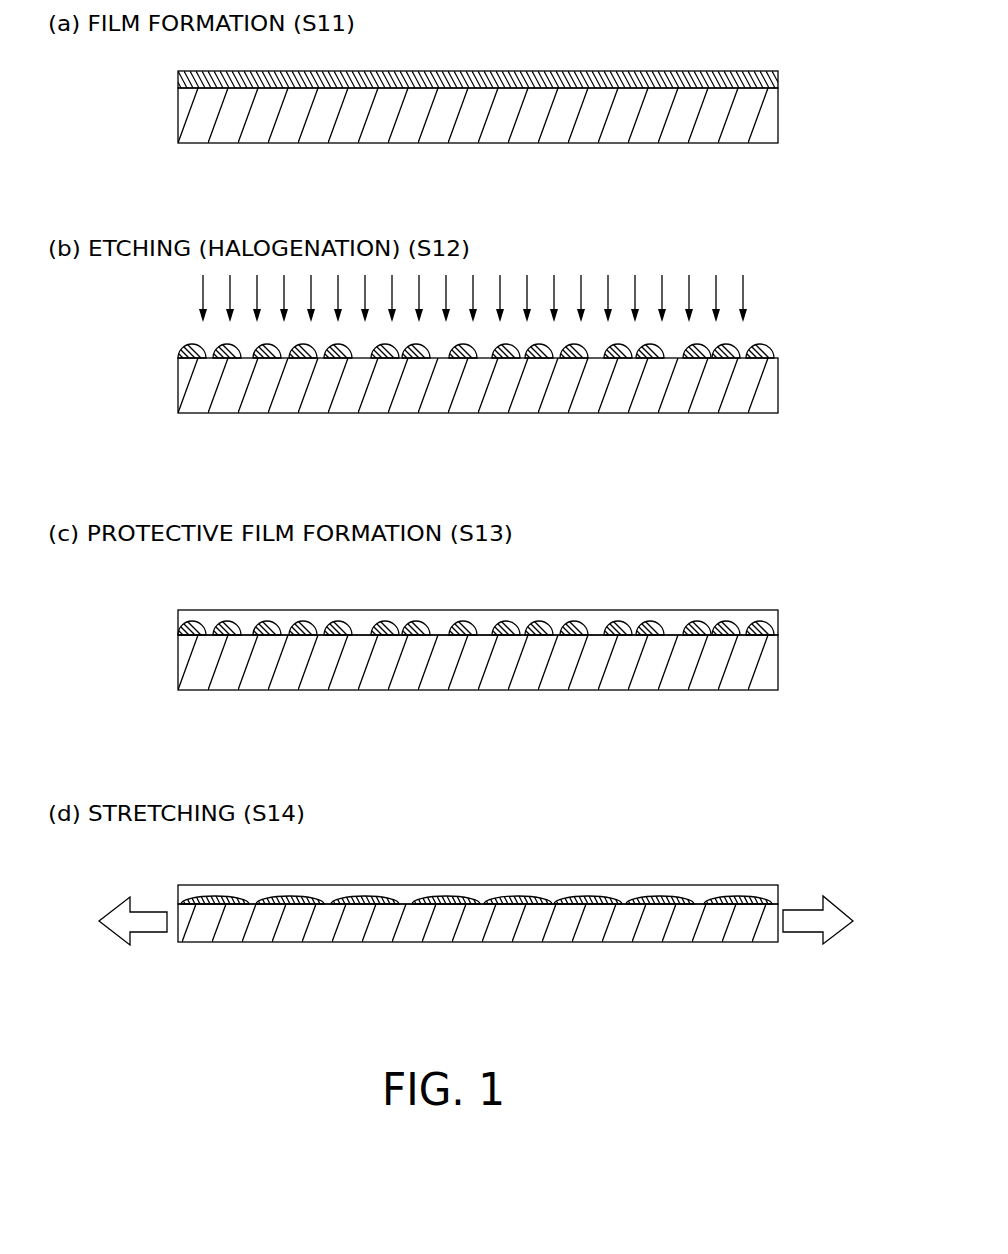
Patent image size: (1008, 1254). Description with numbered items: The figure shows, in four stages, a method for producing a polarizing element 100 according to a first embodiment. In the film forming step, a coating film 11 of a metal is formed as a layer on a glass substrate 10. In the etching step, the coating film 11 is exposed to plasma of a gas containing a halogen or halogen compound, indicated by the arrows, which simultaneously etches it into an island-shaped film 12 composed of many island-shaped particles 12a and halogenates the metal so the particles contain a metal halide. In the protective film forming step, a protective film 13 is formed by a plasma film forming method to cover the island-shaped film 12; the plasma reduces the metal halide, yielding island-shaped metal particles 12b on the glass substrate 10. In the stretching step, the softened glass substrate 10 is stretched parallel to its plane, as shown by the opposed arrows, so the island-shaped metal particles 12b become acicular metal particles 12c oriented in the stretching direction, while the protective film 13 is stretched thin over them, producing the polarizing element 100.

In FIG. 1A, the glass substrate 10 is at (770, 115).
In FIG. 1B, the glass substrate 10 is at (770, 386).
In FIG. 1C, the glass substrate 10 is at (770, 663).
In FIG. 1D, the glass substrate 10 is at (727, 932).
In FIG. 1A, the coating film 11 is at (778, 81).
In FIG. 1B, the island-shaped film 12 is at (509, 323).
In FIG. 1C, the island-shaped film 12 is at (509, 596).
In FIG. 1B, the island-shaped particles 12a is at (763, 346).
In FIG. 1C, the island-shaped metal particles 12b is at (697, 624).
In FIG. 1D, the acicular metal particles 12c is at (668, 897).
In FIG. 1C, the protective film 13 is at (593, 612).
In FIG. 1D, the protective film 13 is at (490, 888).
In FIG. 1D, the polarizing element 100 is at (487, 891).